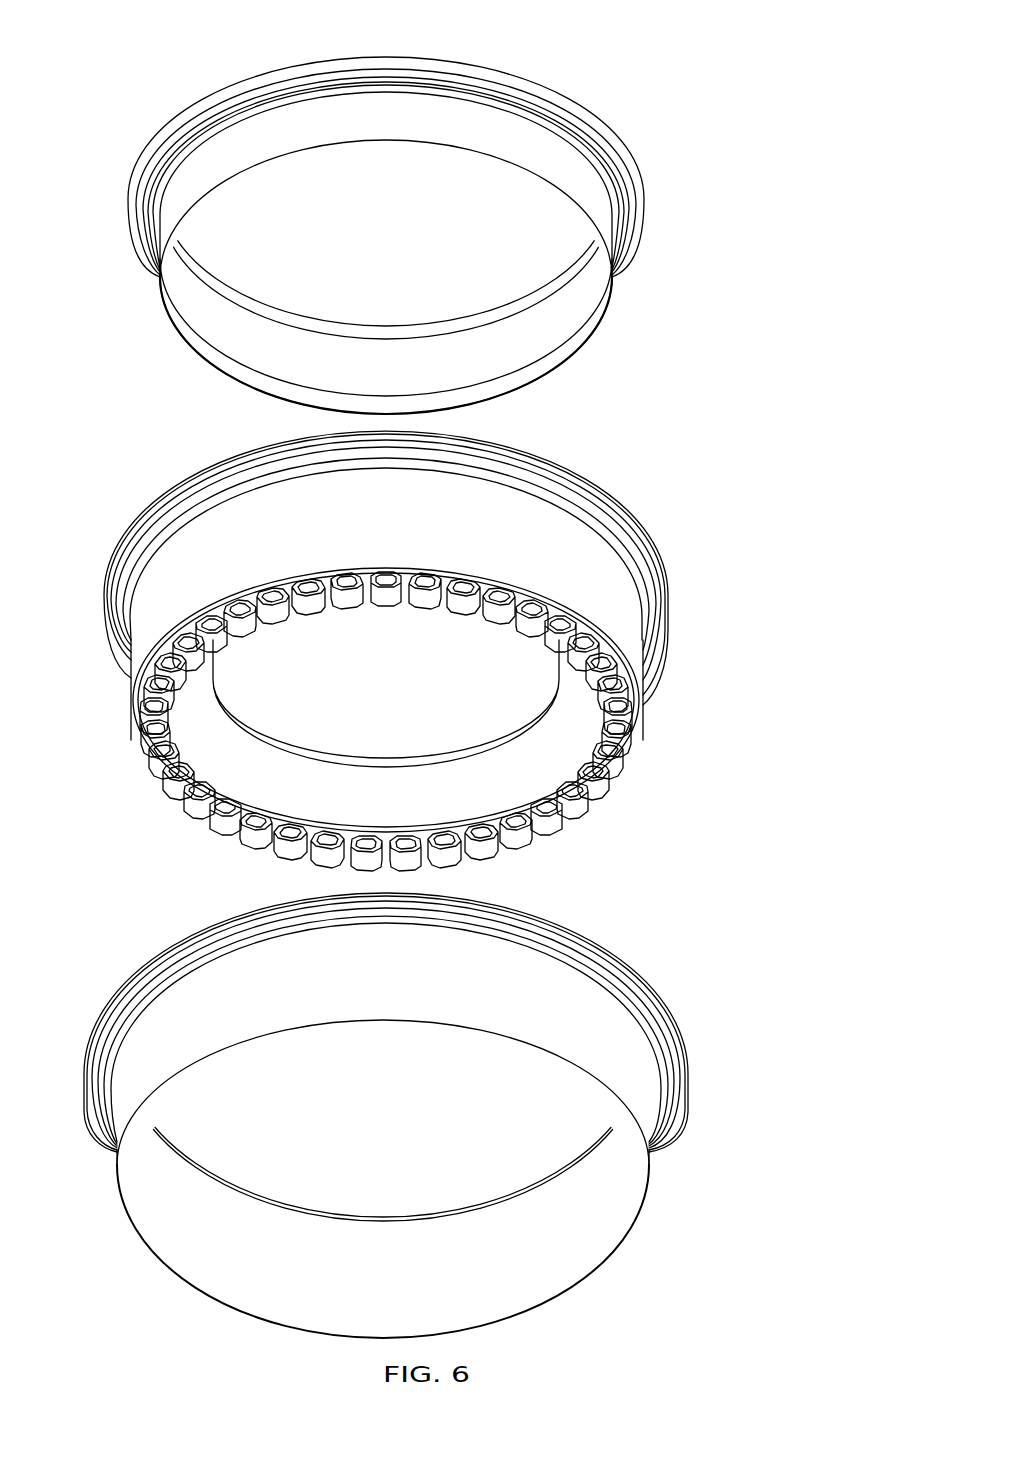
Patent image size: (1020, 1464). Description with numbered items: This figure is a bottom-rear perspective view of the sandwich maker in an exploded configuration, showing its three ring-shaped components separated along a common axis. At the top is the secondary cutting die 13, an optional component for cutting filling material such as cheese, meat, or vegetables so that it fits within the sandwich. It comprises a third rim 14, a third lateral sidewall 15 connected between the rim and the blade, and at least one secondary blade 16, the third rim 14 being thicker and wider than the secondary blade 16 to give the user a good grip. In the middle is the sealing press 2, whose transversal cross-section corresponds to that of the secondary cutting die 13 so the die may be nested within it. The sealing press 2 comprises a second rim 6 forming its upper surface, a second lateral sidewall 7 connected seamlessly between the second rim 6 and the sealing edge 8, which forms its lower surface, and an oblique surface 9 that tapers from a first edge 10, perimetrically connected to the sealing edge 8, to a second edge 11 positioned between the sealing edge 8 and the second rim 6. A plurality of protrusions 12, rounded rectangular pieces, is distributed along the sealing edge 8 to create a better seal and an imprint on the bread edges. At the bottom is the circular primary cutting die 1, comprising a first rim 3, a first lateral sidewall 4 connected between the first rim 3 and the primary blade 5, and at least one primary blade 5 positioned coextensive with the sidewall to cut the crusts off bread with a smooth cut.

The primary cutting die 1 is at (437, 1094).
The sealing press 2 is at (434, 646).
The first rim 3 is at (680, 1060).
The first lateral sidewall 4 is at (652, 1127).
The primary blade 5 is at (497, 1043).
The second rim 6 is at (655, 618).
The second lateral sidewall 7 is at (632, 665).
The sealing edge 8 is at (407, 719).
The oblique surface 9 is at (254, 760).
The first edge 10 is at (478, 812).
The second edge 11 is at (339, 748).
The plurality of protrusions 12 is at (615, 788).
The secondary cutting die 13 is at (462, 217).
The third rim 14 is at (630, 191).
The third lateral sidewall 15 is at (605, 223).
The secondary blade 16 is at (520, 174).